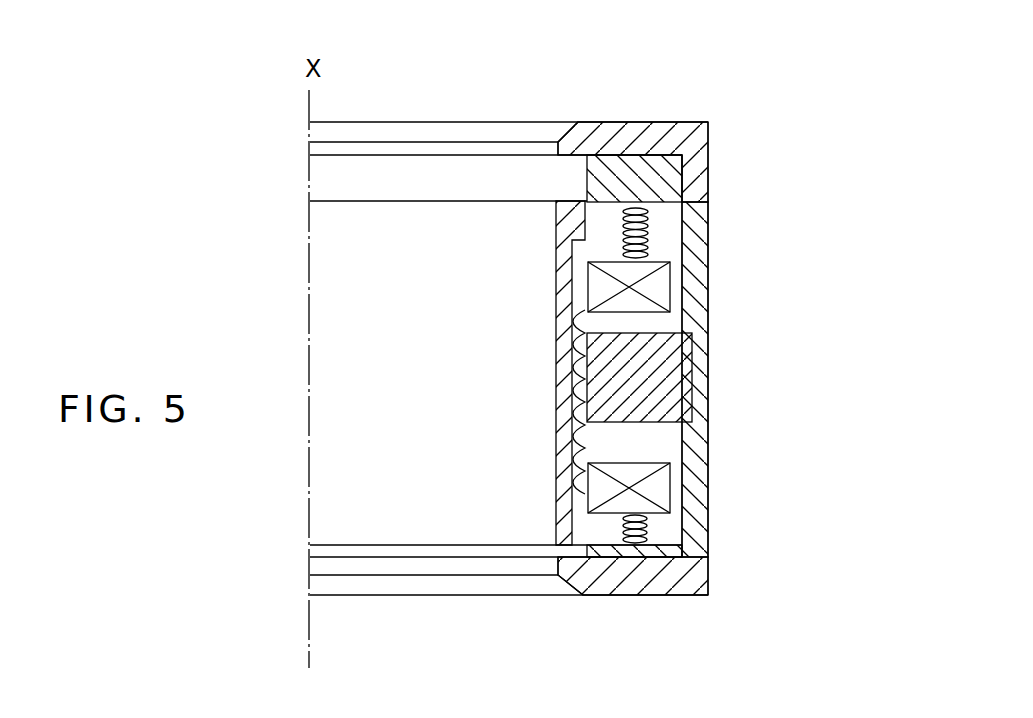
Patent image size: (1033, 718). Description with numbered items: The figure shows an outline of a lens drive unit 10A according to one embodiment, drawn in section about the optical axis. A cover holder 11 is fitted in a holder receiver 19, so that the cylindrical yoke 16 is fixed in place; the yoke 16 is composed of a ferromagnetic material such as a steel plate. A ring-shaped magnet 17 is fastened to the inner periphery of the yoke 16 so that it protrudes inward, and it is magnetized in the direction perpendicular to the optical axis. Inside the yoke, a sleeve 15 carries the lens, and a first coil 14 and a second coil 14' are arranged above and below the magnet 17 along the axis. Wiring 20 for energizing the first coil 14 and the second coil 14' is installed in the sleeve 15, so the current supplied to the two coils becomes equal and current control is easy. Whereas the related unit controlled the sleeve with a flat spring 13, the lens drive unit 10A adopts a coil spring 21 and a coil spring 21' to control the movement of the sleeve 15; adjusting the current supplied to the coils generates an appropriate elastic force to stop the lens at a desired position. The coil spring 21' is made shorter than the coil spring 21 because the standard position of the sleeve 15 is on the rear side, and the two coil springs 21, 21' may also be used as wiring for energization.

The lens drive unit 10A is at (716, 90).
The cover holder 11 is at (692, 153).
The flat spring 13 is at (591, 185).
The first coil 14 is at (693, 287).
The second coil 14' is at (699, 488).
The sleeve 15 is at (570, 487).
The yoke 16 is at (700, 445).
The magnet 17 is at (650, 398).
The holder receiver 19 is at (653, 578).
The wiring 20 is at (575, 373).
The coil spring 21 is at (704, 233).
The coil spring 21' is at (709, 532).